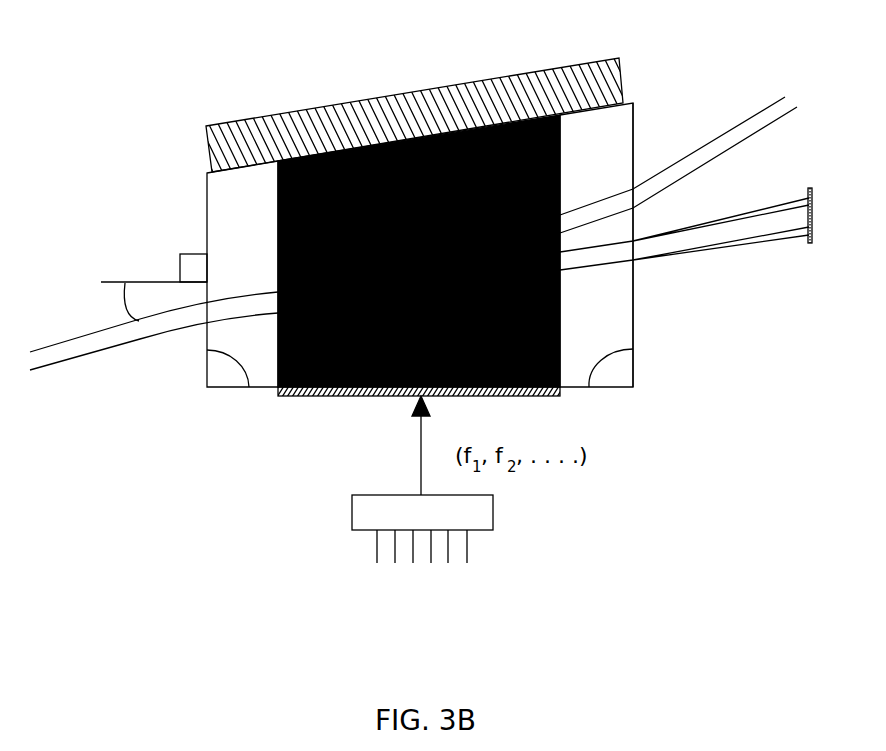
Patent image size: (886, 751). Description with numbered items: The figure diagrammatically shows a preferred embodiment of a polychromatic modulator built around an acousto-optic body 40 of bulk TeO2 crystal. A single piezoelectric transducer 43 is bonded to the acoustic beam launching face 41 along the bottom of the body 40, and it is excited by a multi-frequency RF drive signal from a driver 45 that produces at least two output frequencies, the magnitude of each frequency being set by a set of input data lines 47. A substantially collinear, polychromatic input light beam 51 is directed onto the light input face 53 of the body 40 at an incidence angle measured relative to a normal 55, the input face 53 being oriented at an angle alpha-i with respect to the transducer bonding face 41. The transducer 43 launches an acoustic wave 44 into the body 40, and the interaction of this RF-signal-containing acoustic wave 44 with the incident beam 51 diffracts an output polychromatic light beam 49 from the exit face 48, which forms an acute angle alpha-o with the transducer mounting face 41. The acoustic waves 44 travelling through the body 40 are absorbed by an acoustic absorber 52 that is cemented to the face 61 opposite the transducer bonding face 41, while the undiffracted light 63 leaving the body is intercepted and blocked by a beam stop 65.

The acousto-optic body 40 is at (428, 268).
The acoustic beam launching face 41 is at (572, 389).
The piezoelectric transducer 43 is at (317, 398).
The acoustic wave 44 is at (278, 255).
The driver 45 is at (494, 508).
The input data lines 47 is at (455, 553).
The exit face 48 is at (634, 138).
The output polychromatic light beam 49 is at (746, 127).
The polychromatic input light beam 51 is at (107, 347).
The acoustic absorber 52 is at (590, 62).
The light input face 53 is at (206, 217).
The normal 55 is at (112, 281).
The face opposite the transducer bonding face 61 is at (592, 110).
The undiffracted light 63 is at (737, 243).
The beam stop 65 is at (813, 214).